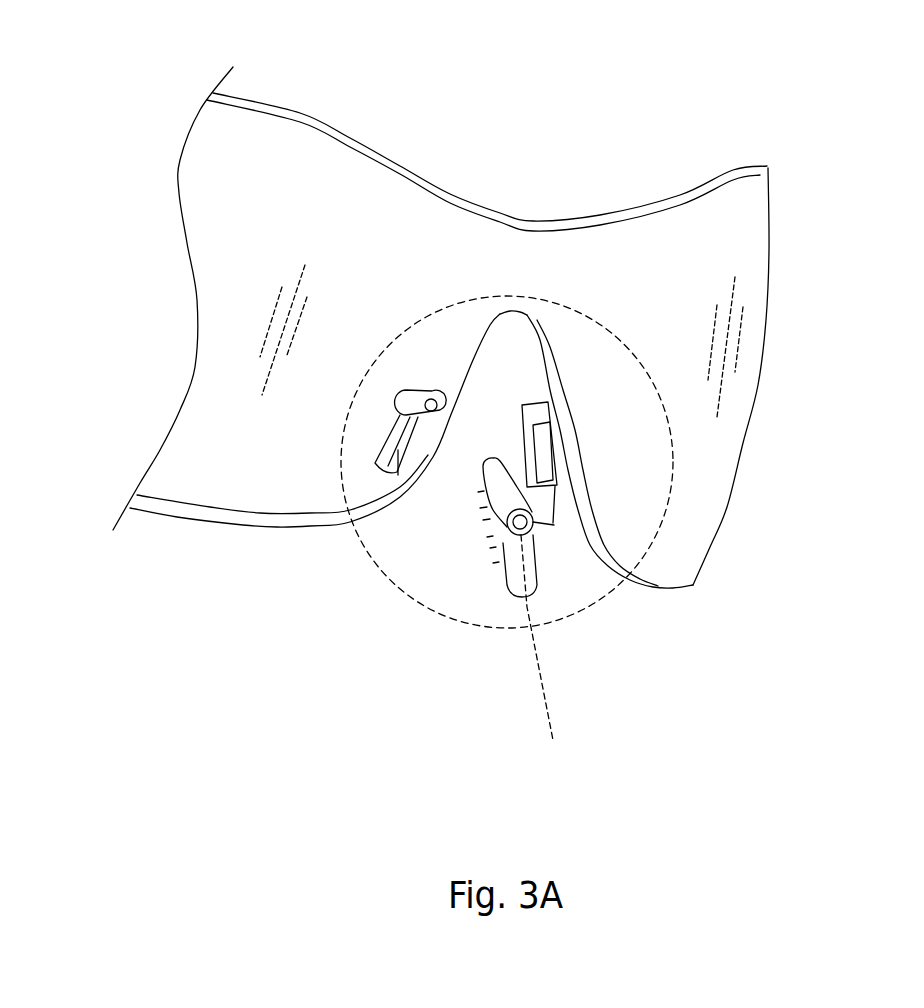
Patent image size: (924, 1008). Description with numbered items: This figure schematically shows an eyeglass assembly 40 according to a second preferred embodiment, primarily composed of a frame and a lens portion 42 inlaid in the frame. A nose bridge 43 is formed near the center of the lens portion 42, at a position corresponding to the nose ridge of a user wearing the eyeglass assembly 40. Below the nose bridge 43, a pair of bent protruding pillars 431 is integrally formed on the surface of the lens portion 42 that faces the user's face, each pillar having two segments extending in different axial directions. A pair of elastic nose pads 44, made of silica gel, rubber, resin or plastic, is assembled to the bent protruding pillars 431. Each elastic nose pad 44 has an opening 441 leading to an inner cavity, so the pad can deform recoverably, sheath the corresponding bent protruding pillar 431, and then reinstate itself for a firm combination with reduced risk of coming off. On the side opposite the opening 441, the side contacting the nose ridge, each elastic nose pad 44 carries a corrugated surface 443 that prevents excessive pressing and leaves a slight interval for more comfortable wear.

The eyeglass assembly 40 is at (541, 62).
The lens portion 42 is at (730, 253).
The nose bridge 43 is at (670, 483).
The bent protruding pillar 431 is at (412, 478).
The elastic nose pad 44 is at (530, 610).
The opening 441 is at (507, 530).
The corrugated surface 443 is at (508, 542).